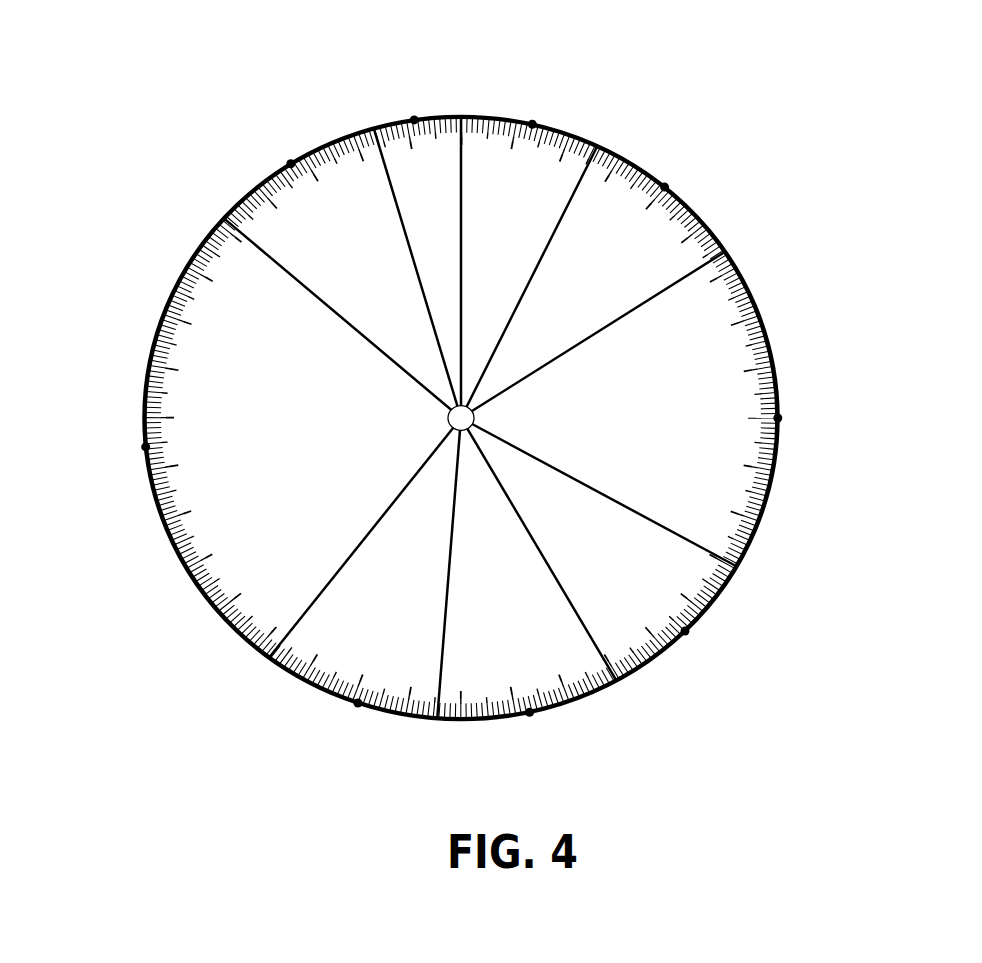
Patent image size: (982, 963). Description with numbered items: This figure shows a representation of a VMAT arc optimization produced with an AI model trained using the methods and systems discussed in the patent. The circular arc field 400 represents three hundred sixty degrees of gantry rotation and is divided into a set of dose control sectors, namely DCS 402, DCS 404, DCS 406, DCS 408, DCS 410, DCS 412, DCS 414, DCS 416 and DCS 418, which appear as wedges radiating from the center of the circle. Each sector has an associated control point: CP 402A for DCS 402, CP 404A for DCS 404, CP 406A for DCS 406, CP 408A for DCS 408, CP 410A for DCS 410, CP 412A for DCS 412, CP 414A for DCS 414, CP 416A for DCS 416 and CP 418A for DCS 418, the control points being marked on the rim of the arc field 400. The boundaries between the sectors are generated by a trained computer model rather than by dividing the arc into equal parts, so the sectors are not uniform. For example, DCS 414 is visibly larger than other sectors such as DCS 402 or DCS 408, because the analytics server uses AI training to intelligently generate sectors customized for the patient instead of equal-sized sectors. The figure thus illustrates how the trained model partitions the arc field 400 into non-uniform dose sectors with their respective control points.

The arc field 400 is at (861, 97).
The DCS 402 is at (515, 266).
The DCS 404 is at (597, 301).
The DCS 406 is at (629, 444).
The DCS 408 is at (615, 562).
The DCS 410 is at (505, 574).
The DCS 412 is at (422, 577).
The DCS 414 is at (329, 447).
The DCS 416 is at (391, 294).
The DCS 418 is at (452, 249).
The CP 402A is at (532, 124).
The CP 404A is at (665, 187).
The CP 406A is at (778, 418).
The CP 408A is at (685, 631).
The CP 410A is at (530, 712).
The CP 412A is at (358, 703).
The CP 414A is at (146, 447).
The CP 416A is at (291, 164).
The CP 418A is at (414, 120).